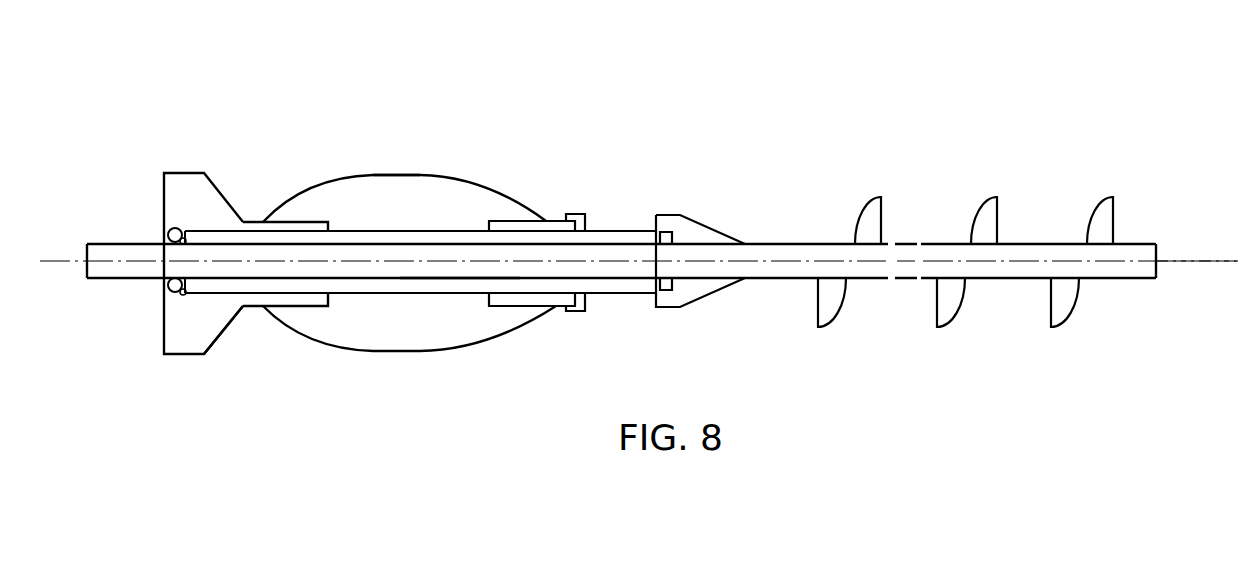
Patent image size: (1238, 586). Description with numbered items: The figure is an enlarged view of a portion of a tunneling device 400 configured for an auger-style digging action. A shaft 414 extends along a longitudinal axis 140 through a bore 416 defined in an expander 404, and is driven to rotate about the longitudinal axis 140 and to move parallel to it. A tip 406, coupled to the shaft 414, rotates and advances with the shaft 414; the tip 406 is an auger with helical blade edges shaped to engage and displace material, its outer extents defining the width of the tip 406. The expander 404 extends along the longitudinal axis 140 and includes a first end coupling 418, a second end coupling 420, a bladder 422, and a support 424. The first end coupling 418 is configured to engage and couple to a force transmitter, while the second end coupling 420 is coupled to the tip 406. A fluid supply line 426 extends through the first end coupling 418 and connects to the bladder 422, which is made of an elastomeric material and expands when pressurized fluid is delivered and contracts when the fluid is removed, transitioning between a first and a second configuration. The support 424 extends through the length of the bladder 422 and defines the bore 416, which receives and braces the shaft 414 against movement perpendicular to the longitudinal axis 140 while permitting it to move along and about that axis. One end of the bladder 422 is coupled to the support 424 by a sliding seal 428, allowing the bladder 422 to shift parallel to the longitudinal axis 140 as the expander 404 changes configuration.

The tunneling device 400 is at (698, 75).
The expander 404 is at (382, 167).
The tip 406 is at (897, 180).
The shaft 414 is at (112, 243).
The bore 416 is at (462, 280).
The first end coupling 418 is at (184, 171).
The second end coupling 420 is at (727, 290).
The bladder 422 is at (453, 203).
The support 424 is at (390, 294).
The fluid supply line 426 is at (208, 320).
The sliding seal 428 is at (587, 312).
The longitudinal axis 140 is at (1223, 258).